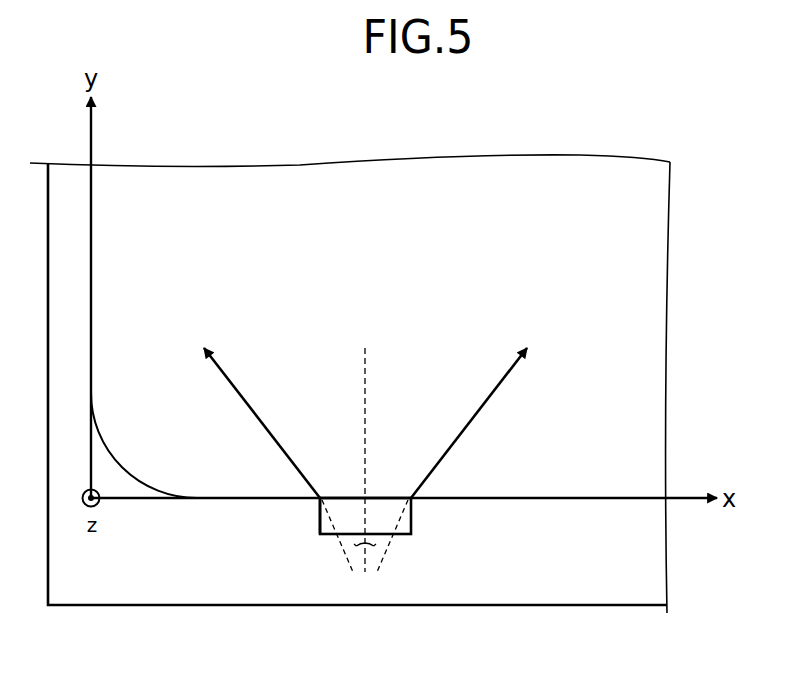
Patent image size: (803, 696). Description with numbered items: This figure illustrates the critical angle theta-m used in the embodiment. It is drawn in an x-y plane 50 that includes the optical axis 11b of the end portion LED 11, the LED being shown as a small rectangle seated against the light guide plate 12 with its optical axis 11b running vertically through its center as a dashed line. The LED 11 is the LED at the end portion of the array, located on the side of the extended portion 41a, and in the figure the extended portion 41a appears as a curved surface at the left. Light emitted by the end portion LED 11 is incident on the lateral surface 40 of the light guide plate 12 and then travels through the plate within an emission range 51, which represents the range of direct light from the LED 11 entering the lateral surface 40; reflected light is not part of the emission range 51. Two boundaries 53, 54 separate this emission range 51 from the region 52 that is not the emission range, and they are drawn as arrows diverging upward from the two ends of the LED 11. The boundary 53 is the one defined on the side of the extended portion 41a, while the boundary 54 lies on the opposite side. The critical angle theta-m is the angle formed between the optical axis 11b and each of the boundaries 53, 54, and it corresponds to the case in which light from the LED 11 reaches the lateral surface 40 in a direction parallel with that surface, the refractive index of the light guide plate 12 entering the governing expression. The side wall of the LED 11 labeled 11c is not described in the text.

The x-y plane 50 is at (350, 384).
The emission range 51 is at (299, 326).
The region that is not the emission range 52 is at (151, 343).
The boundary 53 is at (226, 367).
The boundary 54 is at (512, 370).
The end portion LED 11 is at (413, 508).
The optical axis 11b is at (368, 370).
The side surface of light emitting element 11c is at (318, 508).
The extended portion 41a is at (117, 465).
The lateral surface 40 is at (600, 500).
The light guide plate 12 is at (643, 462).